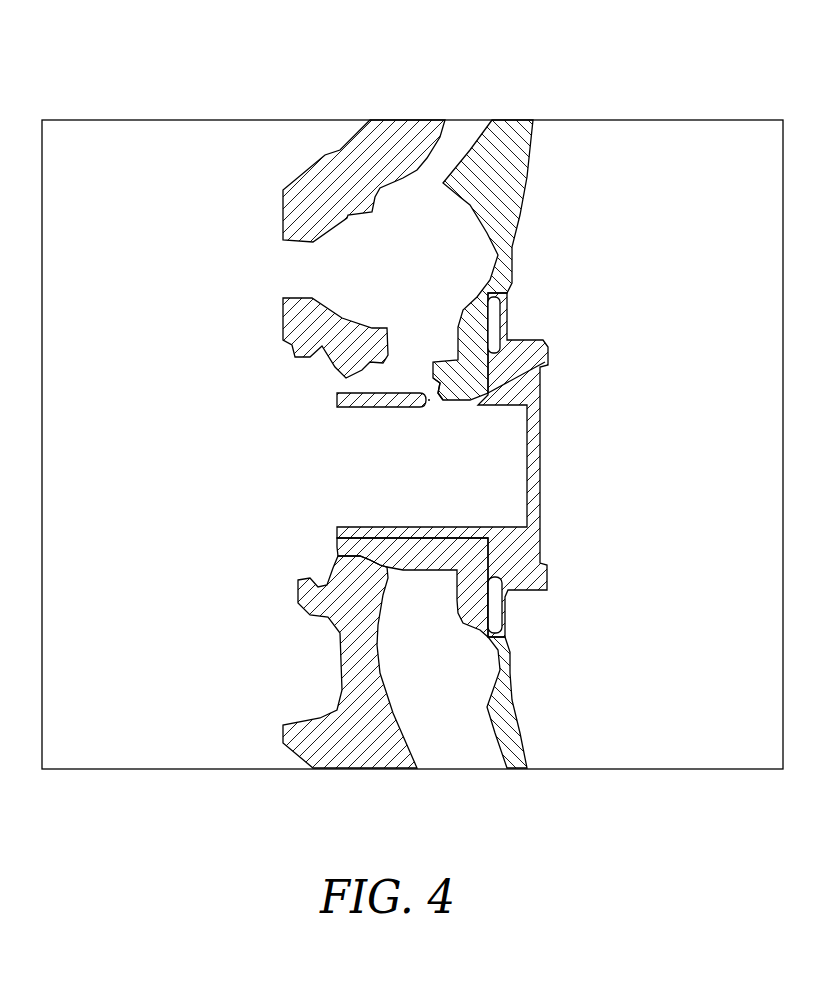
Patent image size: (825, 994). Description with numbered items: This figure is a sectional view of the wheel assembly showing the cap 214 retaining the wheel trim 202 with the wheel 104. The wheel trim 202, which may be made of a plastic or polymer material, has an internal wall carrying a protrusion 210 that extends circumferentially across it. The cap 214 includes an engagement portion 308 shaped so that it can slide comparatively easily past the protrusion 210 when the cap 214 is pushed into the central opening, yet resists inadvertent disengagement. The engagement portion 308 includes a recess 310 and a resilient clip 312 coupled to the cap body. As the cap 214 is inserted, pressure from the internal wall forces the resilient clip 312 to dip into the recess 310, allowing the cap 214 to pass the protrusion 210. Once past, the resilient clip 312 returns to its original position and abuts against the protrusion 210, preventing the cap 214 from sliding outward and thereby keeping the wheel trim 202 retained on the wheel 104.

The wheel 104 is at (397, 133).
The wheel trim 202 is at (523, 182).
The protrusion 210 is at (545, 358).
The cap 214 is at (543, 421).
The engagement portion 308 is at (437, 407).
The recess 310 is at (428, 402).
The resilient clip 312 is at (470, 392).